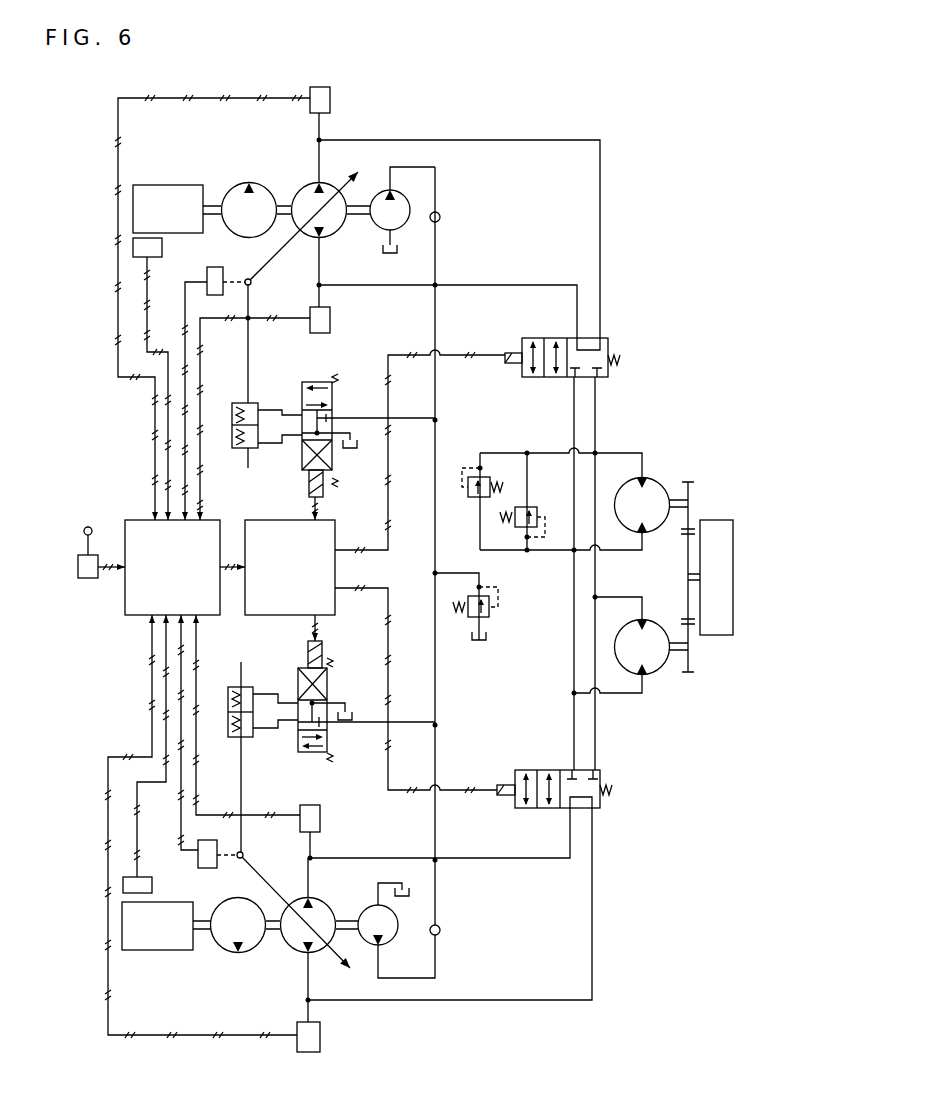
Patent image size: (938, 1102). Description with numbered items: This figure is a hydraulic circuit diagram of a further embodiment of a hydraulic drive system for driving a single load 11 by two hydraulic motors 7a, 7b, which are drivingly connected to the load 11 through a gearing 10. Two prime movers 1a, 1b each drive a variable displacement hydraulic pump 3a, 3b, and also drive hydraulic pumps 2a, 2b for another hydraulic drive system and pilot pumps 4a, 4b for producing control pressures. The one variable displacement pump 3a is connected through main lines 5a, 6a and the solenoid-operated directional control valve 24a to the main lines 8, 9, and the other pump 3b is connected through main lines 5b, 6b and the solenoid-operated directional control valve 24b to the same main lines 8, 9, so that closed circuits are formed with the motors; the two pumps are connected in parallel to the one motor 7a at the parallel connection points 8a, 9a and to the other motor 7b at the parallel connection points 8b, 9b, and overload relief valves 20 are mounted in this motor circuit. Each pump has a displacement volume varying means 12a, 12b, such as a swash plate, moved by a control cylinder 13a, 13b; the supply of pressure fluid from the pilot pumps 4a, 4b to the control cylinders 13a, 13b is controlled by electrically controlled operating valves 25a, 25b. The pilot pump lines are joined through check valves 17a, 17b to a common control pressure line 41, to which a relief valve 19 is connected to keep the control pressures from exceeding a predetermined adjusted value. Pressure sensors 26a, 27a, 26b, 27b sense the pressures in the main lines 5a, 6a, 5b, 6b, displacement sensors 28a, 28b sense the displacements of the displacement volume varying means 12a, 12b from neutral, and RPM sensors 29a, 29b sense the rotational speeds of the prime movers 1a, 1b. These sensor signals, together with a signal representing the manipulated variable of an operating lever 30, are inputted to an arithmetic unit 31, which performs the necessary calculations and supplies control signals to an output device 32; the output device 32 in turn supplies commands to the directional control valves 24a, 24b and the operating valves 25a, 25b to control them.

The prime mover 1a is at (165, 185).
The prime mover 1b is at (162, 950).
The hydraulic pump 2a is at (245, 184).
The hydraulic pump 2b is at (247, 952).
The variable displacement hydraulic pump 3a is at (305, 184).
The variable displacement hydraulic pump 3b is at (291, 955).
The pilot pump 4a is at (386, 188).
The pilot pump 4b is at (396, 945).
The main line 5a is at (516, 145).
The main line 5b is at (520, 1000).
The main line 6a is at (502, 289).
The main line 6b is at (540, 858).
The hydraulic motor 7a is at (650, 482).
The hydraulic motor 7b is at (656, 690).
The main line 8 is at (600, 411).
The parallel connection point 8a is at (596, 454).
The parallel connection point 8b is at (596, 597).
The main line 9 is at (574, 427).
The parallel connection point 9a is at (574, 553).
The parallel connection point 9b is at (572, 693).
The gearing 10 is at (688, 668).
The load 11 is at (718, 520).
The displacement volume varying means 12a is at (271, 262).
The displacement volume varying means 12b is at (282, 877).
The control cylinder 13a is at (255, 404).
The control cylinder 13b is at (250, 687).
The check valve 17a is at (440, 215).
The check valve 17b is at (440, 932).
The relief valve 19 is at (486, 626).
The overload relief valves 20 is at (467, 459).
The solenoid-operated directional control valve 24a is at (608, 344).
The solenoid-operated directional control valve 24b is at (600, 774).
The operating valve 25a is at (336, 392).
The operating valve 25b is at (324, 682).
The pressure sensor 26a is at (330, 95).
The pressure sensor 26b is at (320, 1036).
The pressure sensor 27a is at (330, 320).
The pressure sensor 27b is at (320, 818).
The displacement sensor 28a is at (230, 264).
The displacement sensor 28b is at (207, 868).
The RPM sensor 29a is at (162, 254).
The RPM sensor 29b is at (165, 873).
The operating lever 30 is at (88, 527).
The arithmetic unit 31 is at (213, 520).
The output device 32 is at (333, 520).
The common control pressure line 41 is at (435, 527).